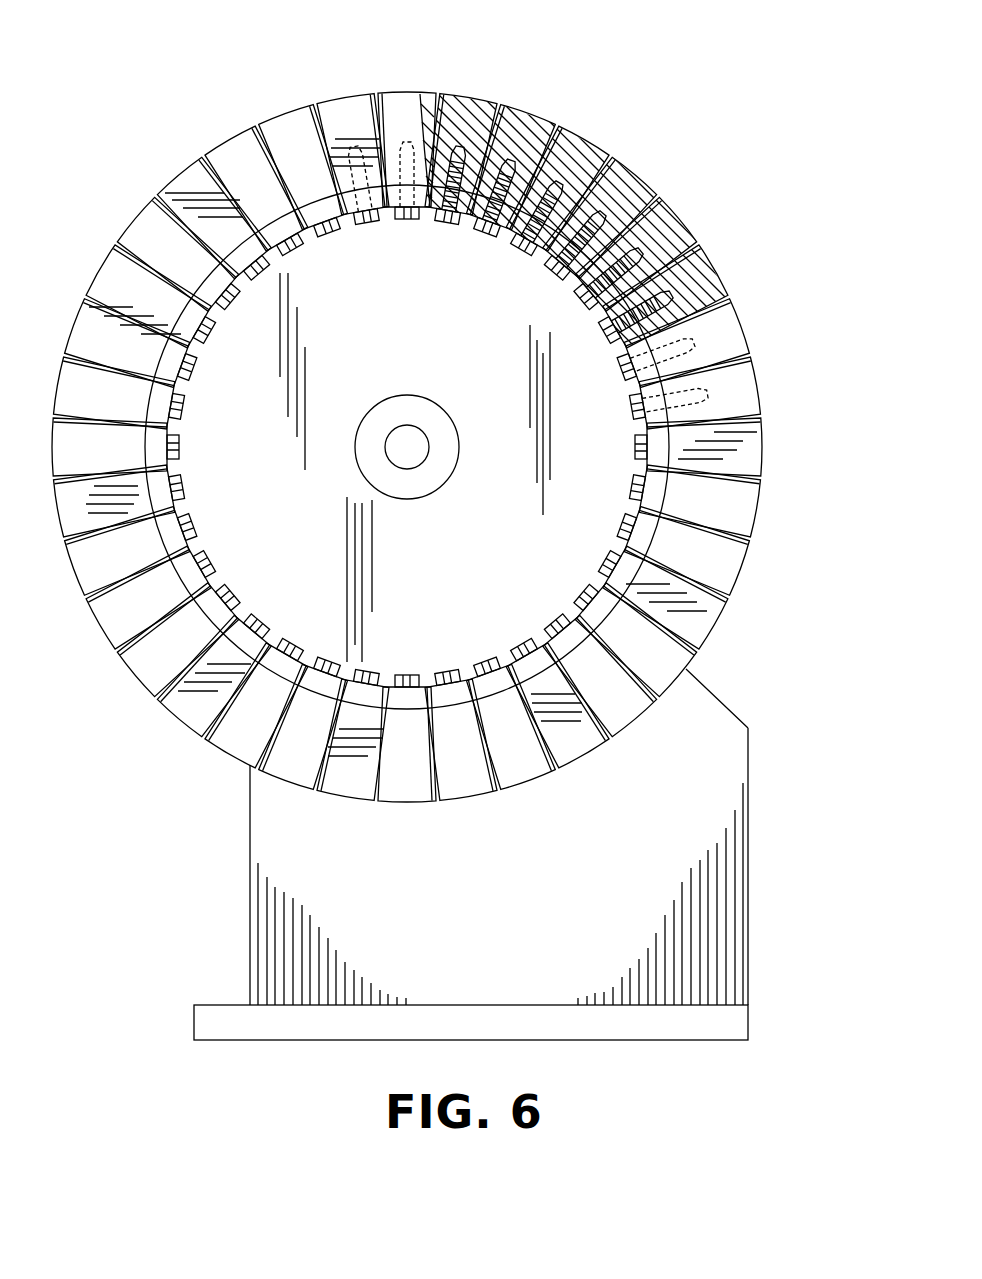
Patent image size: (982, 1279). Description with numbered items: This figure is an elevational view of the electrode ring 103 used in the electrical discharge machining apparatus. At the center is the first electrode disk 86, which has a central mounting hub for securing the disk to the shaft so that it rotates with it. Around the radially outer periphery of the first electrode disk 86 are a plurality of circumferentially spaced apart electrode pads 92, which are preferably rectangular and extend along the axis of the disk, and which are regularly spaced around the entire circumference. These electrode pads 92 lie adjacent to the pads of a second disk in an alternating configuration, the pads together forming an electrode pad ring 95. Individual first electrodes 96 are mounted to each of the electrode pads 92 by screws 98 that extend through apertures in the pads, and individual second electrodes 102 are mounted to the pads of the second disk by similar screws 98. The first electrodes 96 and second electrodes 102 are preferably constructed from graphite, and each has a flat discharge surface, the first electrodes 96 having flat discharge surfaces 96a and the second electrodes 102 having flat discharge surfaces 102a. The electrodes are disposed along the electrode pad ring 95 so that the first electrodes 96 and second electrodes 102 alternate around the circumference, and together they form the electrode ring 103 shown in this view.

The electrode ring 103 is at (152, 152).
The first electrode 96 is at (247, 130).
The flat discharge surface 96a is at (228, 160).
The second electrode 102 is at (405, 95).
The flat discharge surface 102a is at (392, 105).
The electrode pad 92 is at (293, 223).
The screw 98 is at (432, 215).
The electrode pad ring 95 is at (192, 347).
The first electrode disk 86 is at (465, 382).